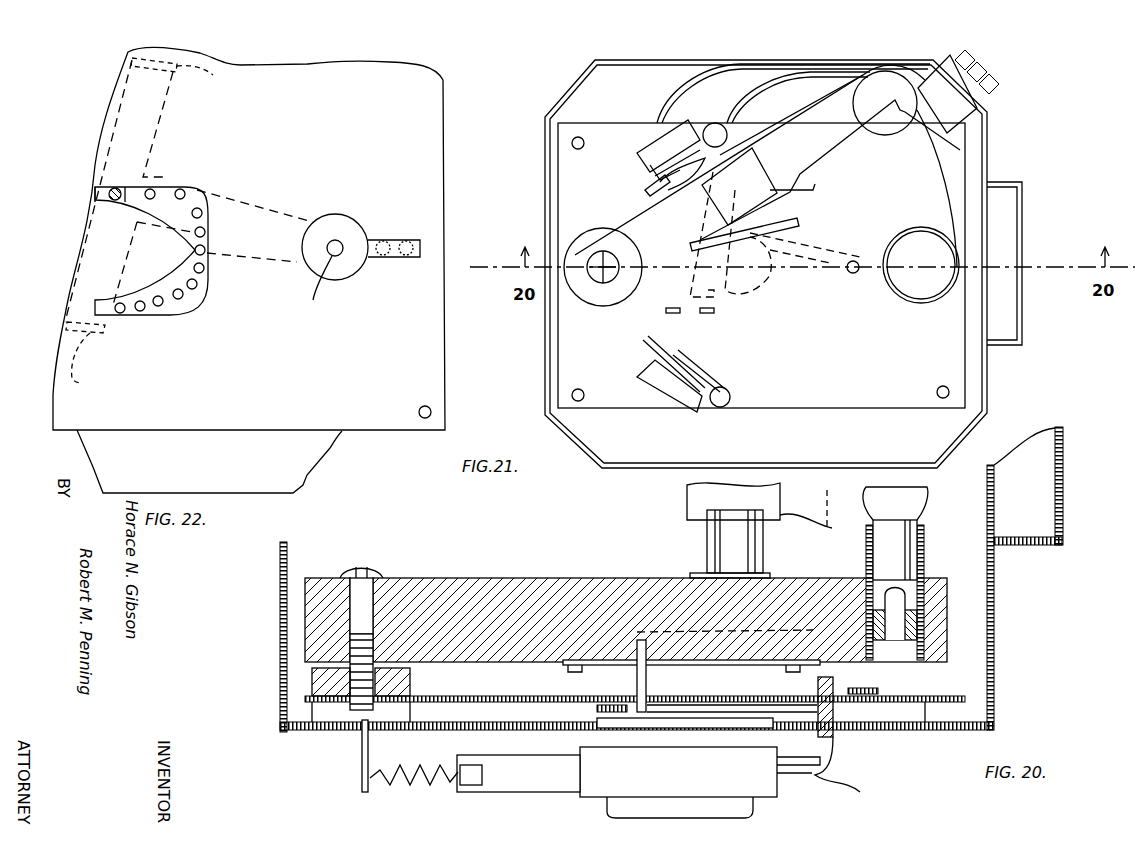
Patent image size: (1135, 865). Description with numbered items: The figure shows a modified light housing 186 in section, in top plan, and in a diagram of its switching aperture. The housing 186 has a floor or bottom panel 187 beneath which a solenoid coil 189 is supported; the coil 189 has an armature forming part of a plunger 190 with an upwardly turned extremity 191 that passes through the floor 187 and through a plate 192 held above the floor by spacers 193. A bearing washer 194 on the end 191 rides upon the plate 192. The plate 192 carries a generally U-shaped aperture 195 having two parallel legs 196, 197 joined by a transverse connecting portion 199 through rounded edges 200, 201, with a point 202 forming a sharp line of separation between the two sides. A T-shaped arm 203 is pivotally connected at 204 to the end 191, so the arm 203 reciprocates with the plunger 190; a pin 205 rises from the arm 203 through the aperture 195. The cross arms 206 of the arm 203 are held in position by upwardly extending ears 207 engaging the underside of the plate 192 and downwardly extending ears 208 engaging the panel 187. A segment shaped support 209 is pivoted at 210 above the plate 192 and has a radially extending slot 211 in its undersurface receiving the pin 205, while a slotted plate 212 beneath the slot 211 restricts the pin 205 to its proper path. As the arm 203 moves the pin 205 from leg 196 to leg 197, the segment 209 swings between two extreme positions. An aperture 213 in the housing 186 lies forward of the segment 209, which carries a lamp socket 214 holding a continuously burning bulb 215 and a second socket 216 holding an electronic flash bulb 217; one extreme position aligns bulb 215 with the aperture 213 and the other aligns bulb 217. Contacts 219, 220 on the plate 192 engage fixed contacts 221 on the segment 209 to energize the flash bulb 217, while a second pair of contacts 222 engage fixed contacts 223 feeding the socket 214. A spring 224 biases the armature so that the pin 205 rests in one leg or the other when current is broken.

In FIG. 20, the light housing 186 is at (280, 582).
In FIG. 21, the light housing 186 is at (546, 322).
In FIG. 20, the floor or bottom panel 187 is at (890, 730).
In FIG. 21, the floor or bottom panel 187 is at (970, 408).
In FIG. 22, the floor or bottom panel 187 is at (293, 470).
In FIG. 20, the solenoid coil 189 is at (745, 812).
In FIG. 20, the plunger 190 is at (525, 795).
In FIG. 20, the upwardly turned extremity 191 is at (838, 755).
In FIG. 22, the upwardly turned extremity 191 is at (316, 286).
In FIG. 20, the plate 192 is at (325, 696).
In FIG. 21, the plate 192 is at (888, 396).
In FIG. 22, the plate 192 is at (363, 416).
In FIG. 20, the spacers 193 is at (332, 718).
In FIG. 20, the bearing washer 194 is at (848, 698).
In FIG. 22, the bearing washer 194 is at (352, 232).
In FIG. 22, the aperture 195 is at (178, 315).
In FIG. 22, the leg 196 is at (122, 186).
In FIG. 22, the leg 197 is at (105, 317).
In FIG. 22, the transverse connecting portion 199 is at (208, 257).
In FIG. 22, the rounded edge 200 is at (197, 190).
In FIG. 22, the rounded edge 201 is at (200, 298).
In FIG. 22, the point 202 is at (196, 252).
In FIG. 20, the T-shaped arm 203 is at (680, 698).
In FIG. 22, the T-shaped arm 203 is at (273, 208).
In FIG. 22, the pivotal connection 204 is at (340, 255).
In FIG. 20, the pin 205 is at (645, 650).
In FIG. 22, the pin 205 is at (97, 200).
In FIG. 22, the cross arms 206 is at (122, 96).
In FIG. 20, the upwardly extending ears 207 is at (595, 696).
In FIG. 22, the upwardly extending ears 207 is at (130, 62).
In FIG. 20, the downwardly extending ears 208 is at (618, 735).
In FIG. 22, the downwardly extending ears 208 is at (147, 236).
In FIG. 20, the segment shaped support 209 is at (528, 578).
In FIG. 21, the segment shaped support 209 is at (845, 305).
In FIG. 20, the pivot 210 is at (365, 620).
In FIG. 21, the pivot 210 is at (600, 258).
In FIG. 20, the radially extending slot 211 is at (735, 640).
In FIG. 21, the radially extending slot 211 is at (795, 218).
In FIG. 20, the slotted plate 212 is at (592, 648).
In FIG. 21, the aperture 213 is at (990, 260).
In FIG. 21, the lamp socket 214 is at (942, 303).
In FIG. 21, the bulb of the continuously burning type 215 is at (928, 262).
In FIG. 20, the second socket 216 is at (687, 500).
In FIG. 21, the second socket 216 is at (722, 212).
In FIG. 21, the bulb 217 is at (867, 130).
In FIG. 21, the contact 219 is at (645, 345).
In FIG. 21, the contact 220 is at (690, 370).
In FIG. 21, the fixed contacts 221 is at (680, 316).
In FIG. 21, the second pair of contacts 222 is at (670, 133).
In FIG. 21, the fixed contacts 223 is at (652, 194).
In FIG. 20, the spring 224 is at (420, 790).